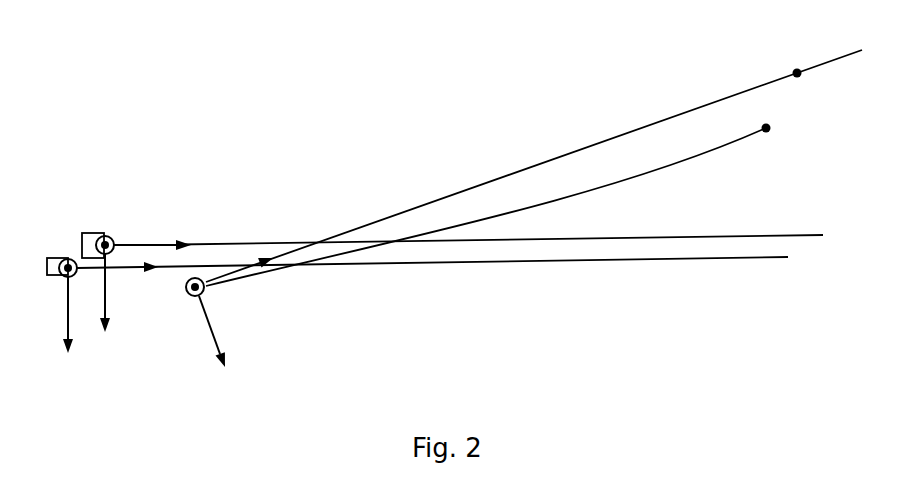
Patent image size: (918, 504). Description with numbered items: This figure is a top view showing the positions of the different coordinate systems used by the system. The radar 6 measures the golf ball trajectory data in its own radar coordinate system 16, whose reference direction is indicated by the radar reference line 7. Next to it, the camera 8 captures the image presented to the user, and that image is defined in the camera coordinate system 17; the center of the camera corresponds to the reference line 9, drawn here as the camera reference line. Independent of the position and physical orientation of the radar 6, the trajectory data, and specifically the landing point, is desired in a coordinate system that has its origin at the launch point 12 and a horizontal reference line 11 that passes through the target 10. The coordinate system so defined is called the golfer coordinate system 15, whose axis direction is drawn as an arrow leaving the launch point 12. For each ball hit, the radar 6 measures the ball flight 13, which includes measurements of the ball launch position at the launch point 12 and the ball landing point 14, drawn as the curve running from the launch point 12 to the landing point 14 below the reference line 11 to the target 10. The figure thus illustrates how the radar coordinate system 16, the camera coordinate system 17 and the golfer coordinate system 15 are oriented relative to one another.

The radar 6 is at (84, 233).
The radar reference line 7 is at (775, 235).
The camera 8 is at (52, 258).
The reference line 9 is at (760, 257).
The target 10 is at (795, 68).
The horizontal reference line 11 is at (565, 155).
The launch point 12 is at (190, 294).
The ball flight 13 is at (630, 178).
The ball landing point 14 is at (770, 133).
The golfer coordinate system 15 is at (215, 332).
The radar coordinate system 16 is at (169, 243).
The camera coordinate system 17 is at (70, 340).